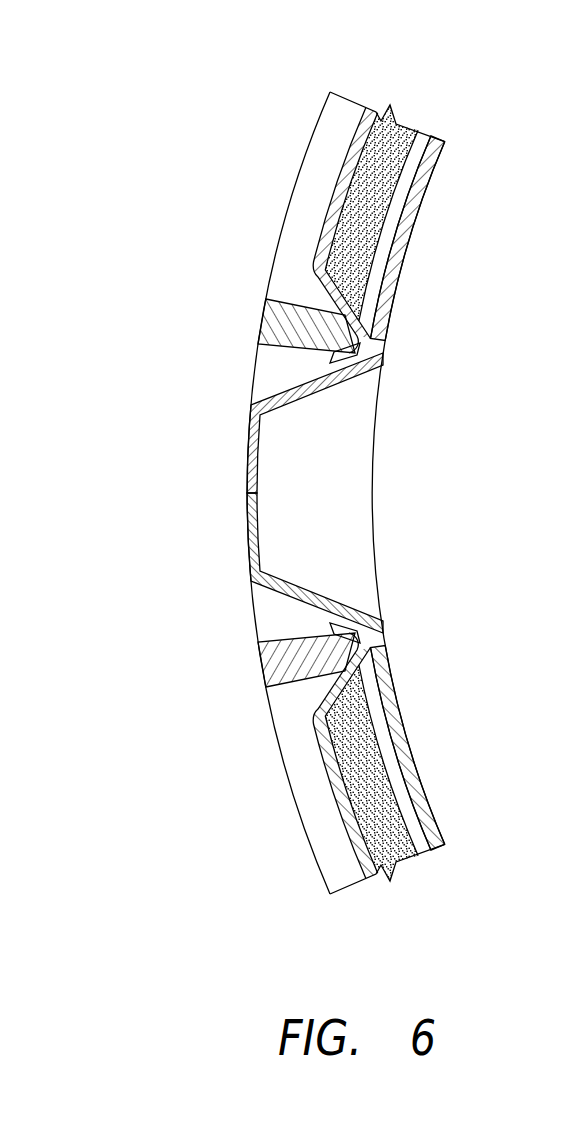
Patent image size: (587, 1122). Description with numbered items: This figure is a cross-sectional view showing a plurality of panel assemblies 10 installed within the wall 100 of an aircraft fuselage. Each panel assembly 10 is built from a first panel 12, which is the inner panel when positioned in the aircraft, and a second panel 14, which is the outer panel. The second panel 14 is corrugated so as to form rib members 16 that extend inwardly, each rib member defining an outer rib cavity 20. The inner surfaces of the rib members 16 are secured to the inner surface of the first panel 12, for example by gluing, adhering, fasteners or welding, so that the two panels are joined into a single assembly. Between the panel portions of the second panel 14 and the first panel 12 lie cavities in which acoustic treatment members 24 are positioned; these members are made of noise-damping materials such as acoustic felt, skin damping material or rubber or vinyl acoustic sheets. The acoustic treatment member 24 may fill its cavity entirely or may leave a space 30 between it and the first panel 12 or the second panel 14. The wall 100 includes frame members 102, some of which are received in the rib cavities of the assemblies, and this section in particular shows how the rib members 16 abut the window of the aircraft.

The panel assembly 10 is at (298, 89).
The first panel 12 is at (401, 253).
The second panel 14 is at (338, 214).
The rib members 16 is at (387, 339).
The outer rib cavity 20 is at (331, 652).
The acoustic treatment members 24 is at (387, 147).
The space 30 is at (393, 213).
The wall 100 is at (183, 488).
The frame members 102 is at (291, 230).